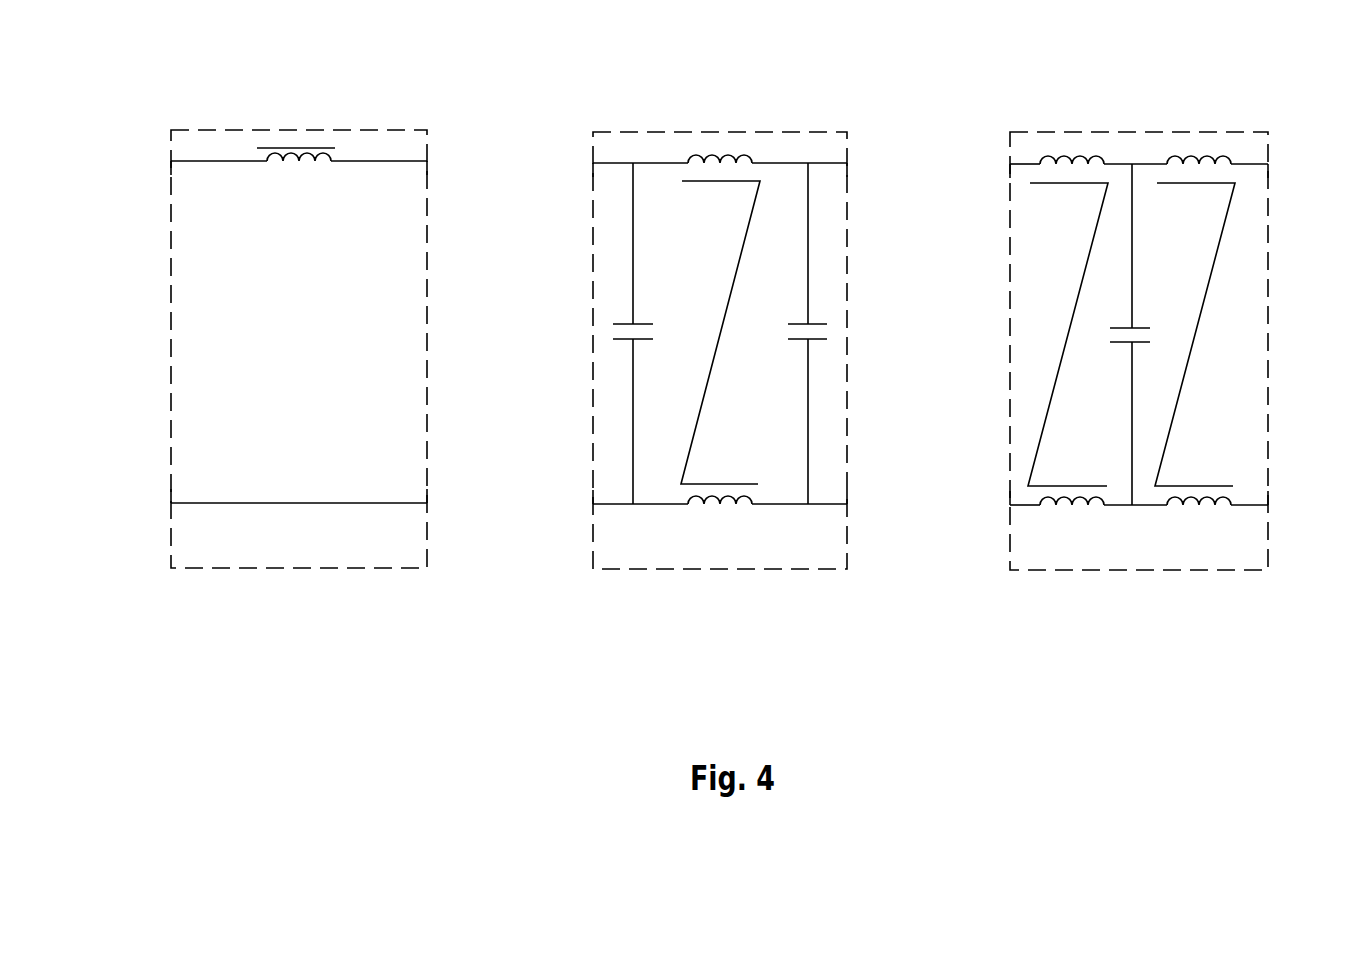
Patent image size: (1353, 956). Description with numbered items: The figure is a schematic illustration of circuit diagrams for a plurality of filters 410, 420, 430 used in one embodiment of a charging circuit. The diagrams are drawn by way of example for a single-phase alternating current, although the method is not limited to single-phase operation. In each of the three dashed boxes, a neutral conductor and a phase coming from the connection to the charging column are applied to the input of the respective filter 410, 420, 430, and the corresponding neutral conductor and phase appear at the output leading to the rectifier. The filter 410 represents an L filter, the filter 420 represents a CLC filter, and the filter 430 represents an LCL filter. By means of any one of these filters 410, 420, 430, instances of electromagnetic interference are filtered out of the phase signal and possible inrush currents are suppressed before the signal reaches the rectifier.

The filter 410 is at (298, 547).
The filter 420 is at (717, 547).
The filter 430 is at (1135, 547).